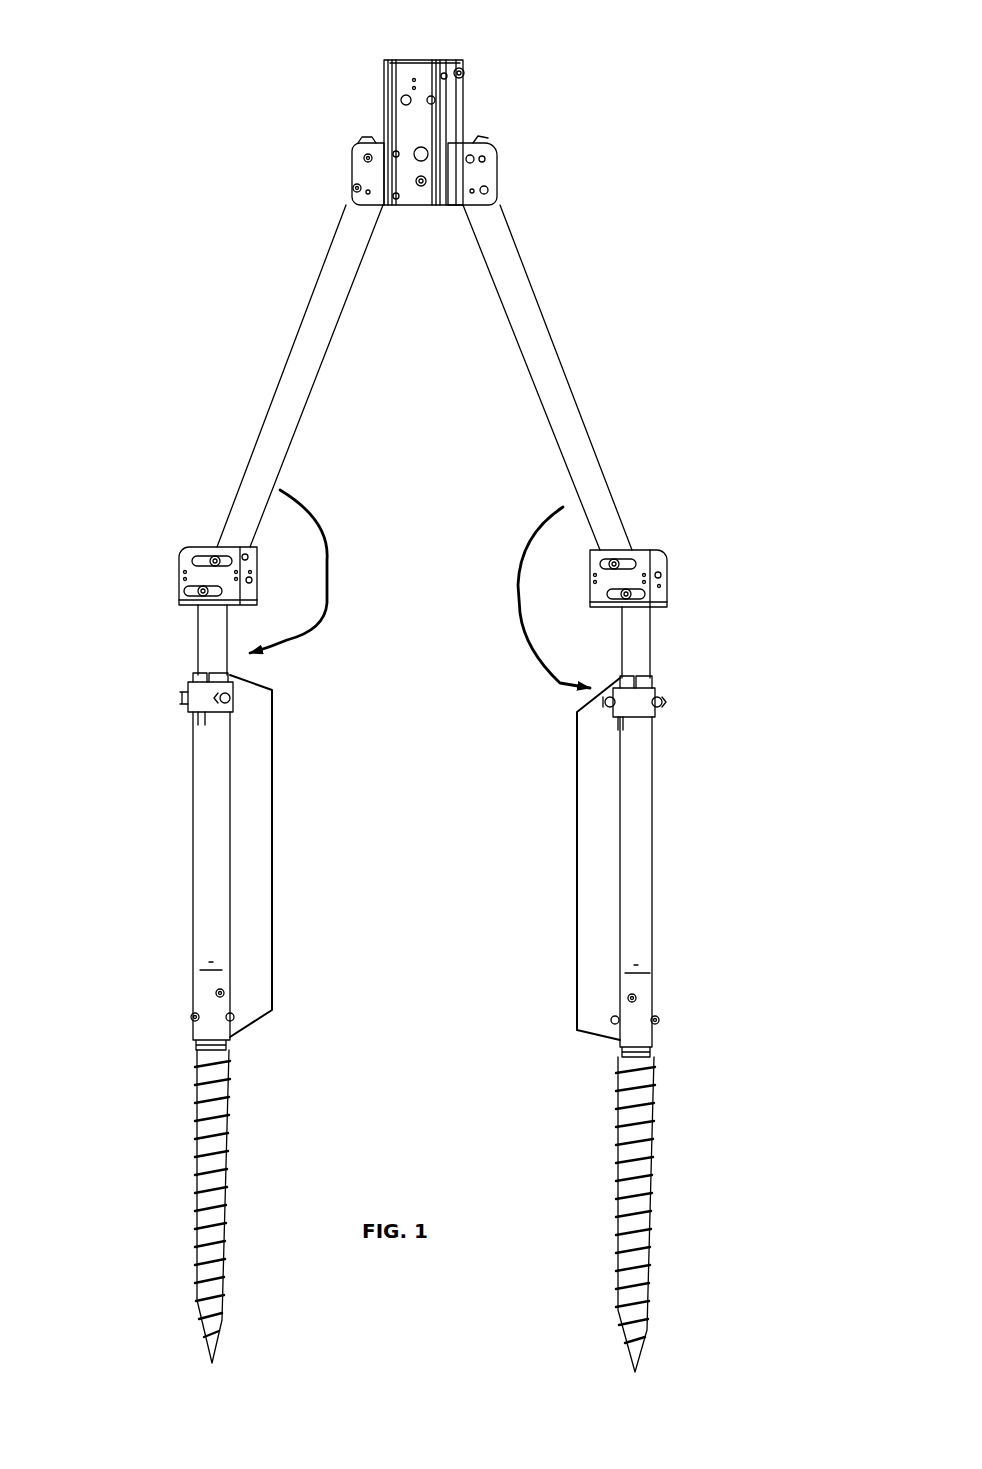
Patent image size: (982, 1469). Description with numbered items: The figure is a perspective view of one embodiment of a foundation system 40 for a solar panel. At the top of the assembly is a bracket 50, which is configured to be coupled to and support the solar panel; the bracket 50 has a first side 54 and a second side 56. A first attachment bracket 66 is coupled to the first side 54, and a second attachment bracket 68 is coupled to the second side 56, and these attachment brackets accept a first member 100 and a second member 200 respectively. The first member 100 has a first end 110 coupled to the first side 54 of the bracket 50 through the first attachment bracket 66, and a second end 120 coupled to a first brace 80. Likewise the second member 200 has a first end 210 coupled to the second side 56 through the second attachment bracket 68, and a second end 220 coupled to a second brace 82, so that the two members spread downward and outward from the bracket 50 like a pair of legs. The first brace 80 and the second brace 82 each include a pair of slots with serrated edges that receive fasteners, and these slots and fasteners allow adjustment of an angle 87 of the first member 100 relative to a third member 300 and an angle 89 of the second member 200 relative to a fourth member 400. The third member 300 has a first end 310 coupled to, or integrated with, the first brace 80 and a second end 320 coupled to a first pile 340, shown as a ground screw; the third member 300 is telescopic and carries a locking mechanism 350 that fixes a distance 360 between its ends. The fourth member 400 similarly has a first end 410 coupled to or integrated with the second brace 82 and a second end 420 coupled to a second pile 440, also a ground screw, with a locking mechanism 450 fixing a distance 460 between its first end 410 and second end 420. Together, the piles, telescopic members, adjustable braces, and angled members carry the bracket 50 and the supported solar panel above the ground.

The foundation system 40 is at (692, 223).
The bracket 50 is at (425, 85).
The first side 54 is at (373, 103).
The second side 56 is at (475, 108).
The first attachment bracket 66 is at (368, 160).
The second attachment bracket 68 is at (470, 168).
The first member 100 is at (322, 273).
The first end 110 is at (330, 183).
The second member 200 is at (535, 282).
The first end 210 is at (508, 190).
The first brace 80 is at (197, 547).
The second brace 82 is at (642, 557).
The angle 87 is at (328, 560).
The angle 89 is at (520, 568).
The second end 120 is at (157, 515).
The second end 220 is at (708, 530).
The third member 300 is at (202, 662).
The first end 310 is at (158, 602).
The locking mechanism 350 is at (200, 702).
The second end 320 is at (178, 985).
The distance 360 is at (270, 905).
The first pile 340 is at (193, 1120).
The fourth member 400 is at (643, 667).
The first end 410 is at (668, 625).
The locking mechanism 450 is at (658, 700).
The second end 420 is at (677, 990).
The distance 460 is at (577, 905).
The second pile 440 is at (650, 1108).